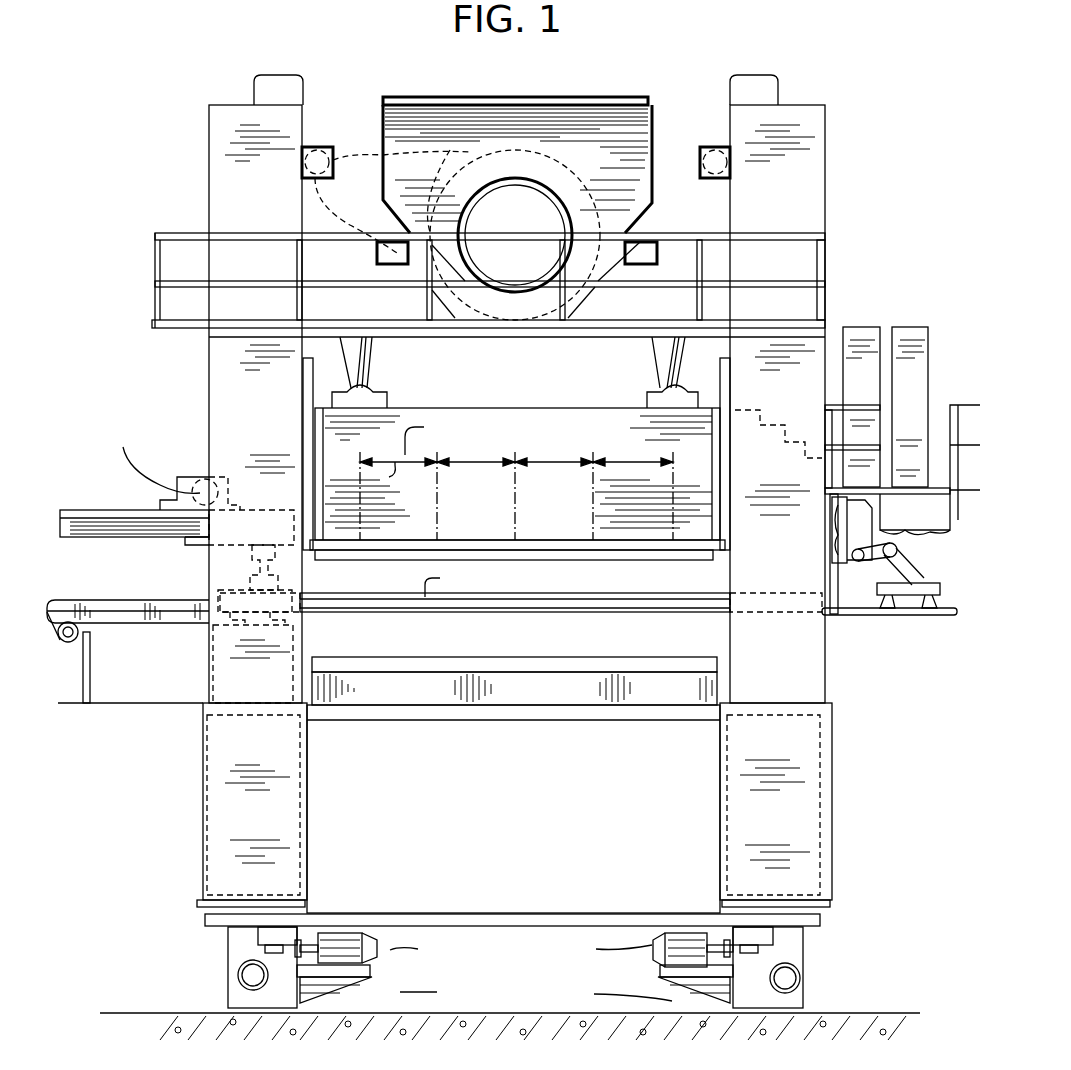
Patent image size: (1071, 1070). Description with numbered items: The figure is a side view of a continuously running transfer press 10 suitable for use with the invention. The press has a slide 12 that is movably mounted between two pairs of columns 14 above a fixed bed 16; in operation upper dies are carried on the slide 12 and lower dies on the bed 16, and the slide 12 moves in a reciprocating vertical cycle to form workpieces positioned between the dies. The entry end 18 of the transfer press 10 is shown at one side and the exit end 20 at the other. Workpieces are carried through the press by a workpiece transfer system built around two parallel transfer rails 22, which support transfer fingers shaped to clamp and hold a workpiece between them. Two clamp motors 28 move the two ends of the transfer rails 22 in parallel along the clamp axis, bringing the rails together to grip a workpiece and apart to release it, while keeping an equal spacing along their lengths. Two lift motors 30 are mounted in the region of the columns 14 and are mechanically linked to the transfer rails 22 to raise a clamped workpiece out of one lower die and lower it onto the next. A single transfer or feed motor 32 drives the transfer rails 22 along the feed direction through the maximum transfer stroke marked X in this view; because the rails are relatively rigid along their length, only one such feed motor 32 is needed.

The transfer press 10 is at (186, 730).
The slide 12 is at (573, 500).
The columns 14 is at (282, 433).
The bed 16 is at (532, 833).
The entry end 18 is at (838, 585).
The exit end 20 is at (195, 591).
The transfer rails 22 is at (523, 600).
The clamp motors 28 is at (377, 955).
The lift motors 30 is at (246, 976).
The transfer or feed motor 32 is at (200, 480).